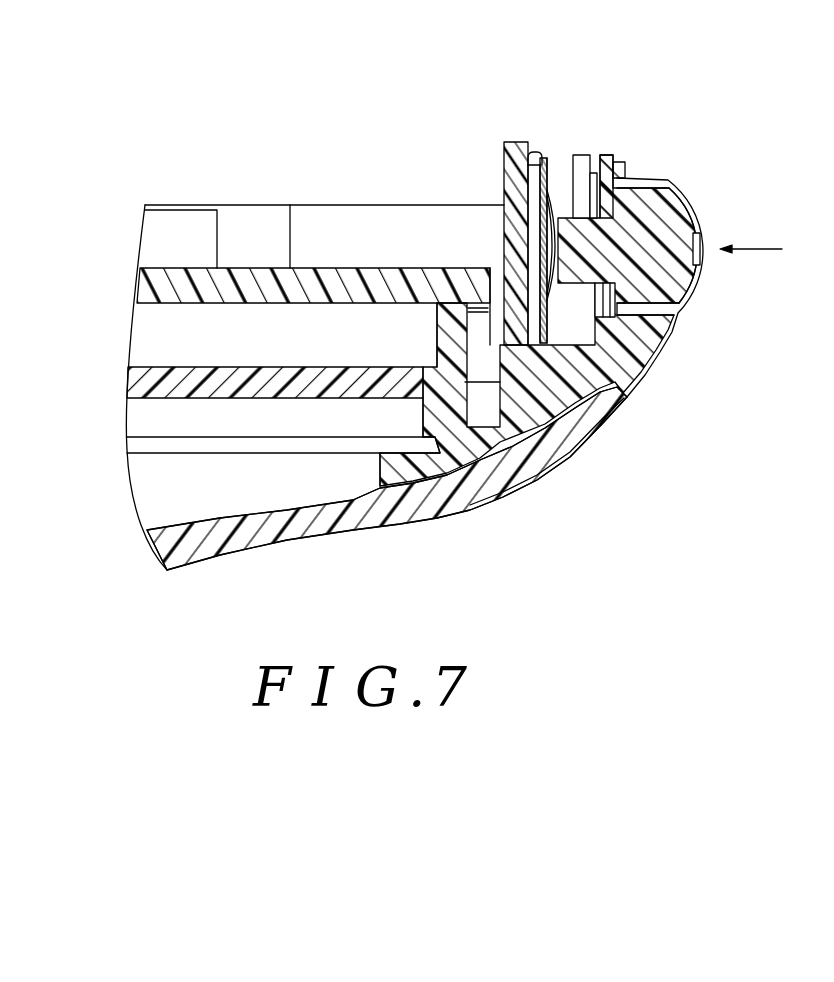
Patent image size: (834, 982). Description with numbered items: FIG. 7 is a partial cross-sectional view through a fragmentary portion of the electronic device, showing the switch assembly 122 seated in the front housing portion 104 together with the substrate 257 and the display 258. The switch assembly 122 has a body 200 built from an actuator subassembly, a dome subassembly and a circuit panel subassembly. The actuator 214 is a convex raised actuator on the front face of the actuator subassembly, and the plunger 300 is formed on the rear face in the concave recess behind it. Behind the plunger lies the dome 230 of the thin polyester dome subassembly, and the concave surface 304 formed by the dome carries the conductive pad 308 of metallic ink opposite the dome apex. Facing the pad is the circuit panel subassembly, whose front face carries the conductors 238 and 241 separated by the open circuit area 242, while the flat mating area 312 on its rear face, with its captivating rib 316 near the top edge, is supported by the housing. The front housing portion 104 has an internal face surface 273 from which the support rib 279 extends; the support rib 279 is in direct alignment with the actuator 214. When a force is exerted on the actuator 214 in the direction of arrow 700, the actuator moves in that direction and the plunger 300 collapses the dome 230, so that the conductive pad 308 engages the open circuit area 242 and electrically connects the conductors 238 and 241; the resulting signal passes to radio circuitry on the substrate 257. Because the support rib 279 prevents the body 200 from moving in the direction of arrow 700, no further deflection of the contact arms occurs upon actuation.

The front housing portion 104 is at (438, 537).
The switch assembly 122 is at (706, 189).
The body 200 is at (551, 157).
The left actuator 214 is at (703, 231).
The left dome 230 is at (547, 315).
The conductor 238 is at (528, 183).
The conductor 241 is at (630, 398).
The left open circuit area 242 is at (537, 248).
The substrate 257 is at (347, 268).
The display 258 is at (433, 420).
The internal face surface 273 is at (245, 521).
The left support rib 279 is at (512, 147).
The plunger 300 is at (655, 356).
The concave surface 304 is at (553, 288).
The conductive pad 308 is at (572, 200).
The mating area 312 is at (543, 213).
The captivating rib 316 is at (523, 152).
The arrow 700 is at (762, 249).